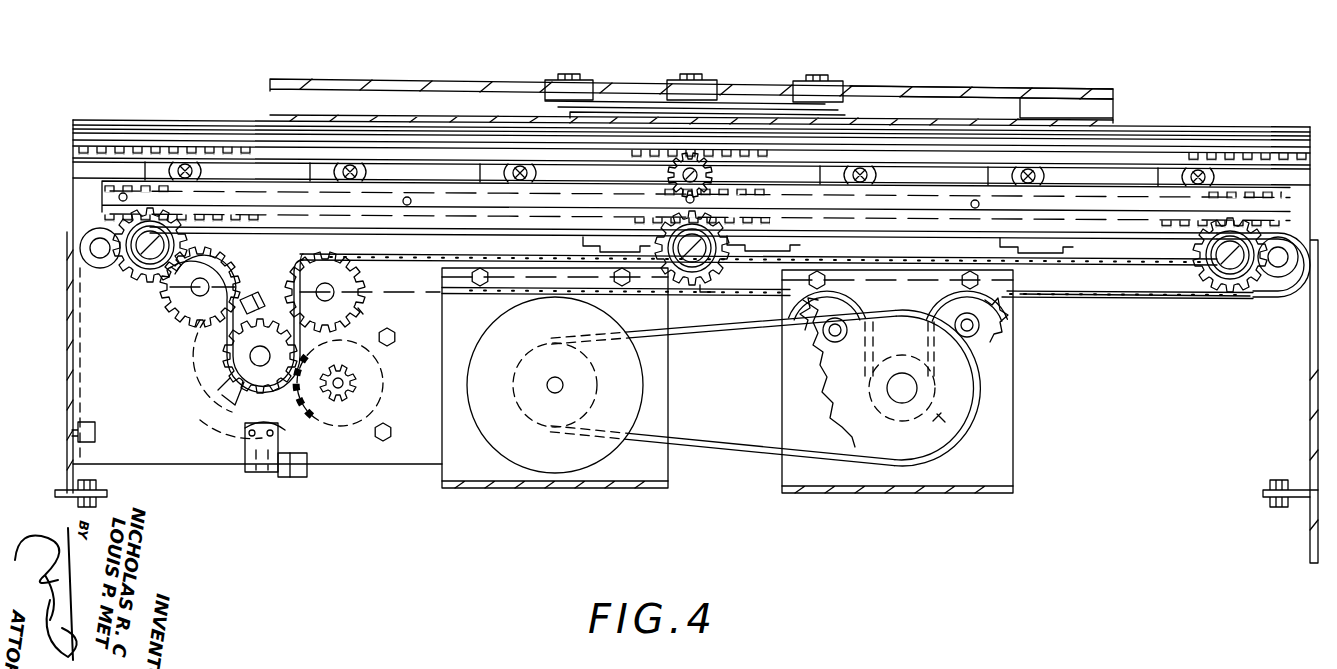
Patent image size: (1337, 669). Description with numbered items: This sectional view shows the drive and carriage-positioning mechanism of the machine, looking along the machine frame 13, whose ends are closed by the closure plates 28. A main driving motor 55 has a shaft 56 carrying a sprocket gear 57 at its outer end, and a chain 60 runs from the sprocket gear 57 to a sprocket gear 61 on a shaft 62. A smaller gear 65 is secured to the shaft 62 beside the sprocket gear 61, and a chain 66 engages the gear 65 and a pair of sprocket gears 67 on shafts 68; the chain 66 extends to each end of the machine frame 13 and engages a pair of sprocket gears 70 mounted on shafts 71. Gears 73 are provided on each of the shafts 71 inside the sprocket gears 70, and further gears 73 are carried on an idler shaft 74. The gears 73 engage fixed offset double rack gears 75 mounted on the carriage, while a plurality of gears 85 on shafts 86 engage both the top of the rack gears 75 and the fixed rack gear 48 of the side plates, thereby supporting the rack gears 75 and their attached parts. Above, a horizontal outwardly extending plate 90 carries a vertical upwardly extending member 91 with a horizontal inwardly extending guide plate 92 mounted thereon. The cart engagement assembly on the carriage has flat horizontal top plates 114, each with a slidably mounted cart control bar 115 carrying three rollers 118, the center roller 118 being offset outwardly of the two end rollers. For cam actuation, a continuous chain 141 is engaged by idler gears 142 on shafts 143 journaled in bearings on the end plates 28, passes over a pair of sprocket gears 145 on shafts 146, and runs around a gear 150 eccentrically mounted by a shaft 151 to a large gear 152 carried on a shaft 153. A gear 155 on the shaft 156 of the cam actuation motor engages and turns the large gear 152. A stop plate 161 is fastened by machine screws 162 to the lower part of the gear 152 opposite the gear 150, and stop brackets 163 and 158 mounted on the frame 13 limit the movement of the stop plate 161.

The machine frame 13 is at (362, 463).
The closure plates 28 is at (68, 290).
The fixed rack gear 48 is at (150, 140).
The main driving motor 55 is at (627, 407).
The shaft 56 is at (563, 385).
The sprocket gear 57 is at (520, 398).
The chain 60 is at (700, 455).
The sprocket gear 61 is at (875, 442).
The shaft 62 is at (912, 390).
The gear 65 is at (947, 448).
The chain 66 is at (480, 236).
The sprocket gears 67 is at (818, 340).
The shafts 68 is at (828, 330).
The sprocket gears 70 is at (145, 282).
The shafts 71 is at (150, 270).
The gears 73 is at (140, 266).
The idler shaft 74 is at (710, 275).
The fixed offset double rack gears 75 is at (772, 205).
The gears 85 is at (713, 178).
The shafts 86 is at (185, 165).
The horizontal outwardly extending plate 90 is at (1035, 118).
The vertical upwardly extending member 91 is at (985, 100).
The horizontal inwardly extending guide plate 92 is at (920, 90).
The flat horizontal top plates 114 is at (760, 108).
The cart control bar 115 is at (610, 102).
The rollers 118 is at (572, 78).
The continuous chain 141 is at (1130, 296).
The idler gears 142 is at (92, 242).
The shafts 143 is at (90, 252).
The sprocket gears 145 is at (196, 320).
The shafts 146 is at (205, 284).
The gear 150 is at (212, 400).
The shaft 151 is at (255, 358).
The large gear 152 is at (305, 428).
The shaft 153 is at (215, 434).
The gear 155 is at (350, 373).
The shaft 156 is at (358, 390).
The stop bracket 158 is at (265, 287).
The stop plate 161 is at (255, 475).
The machine screws 162 is at (251, 404).
The stop bracket 163 is at (292, 480).